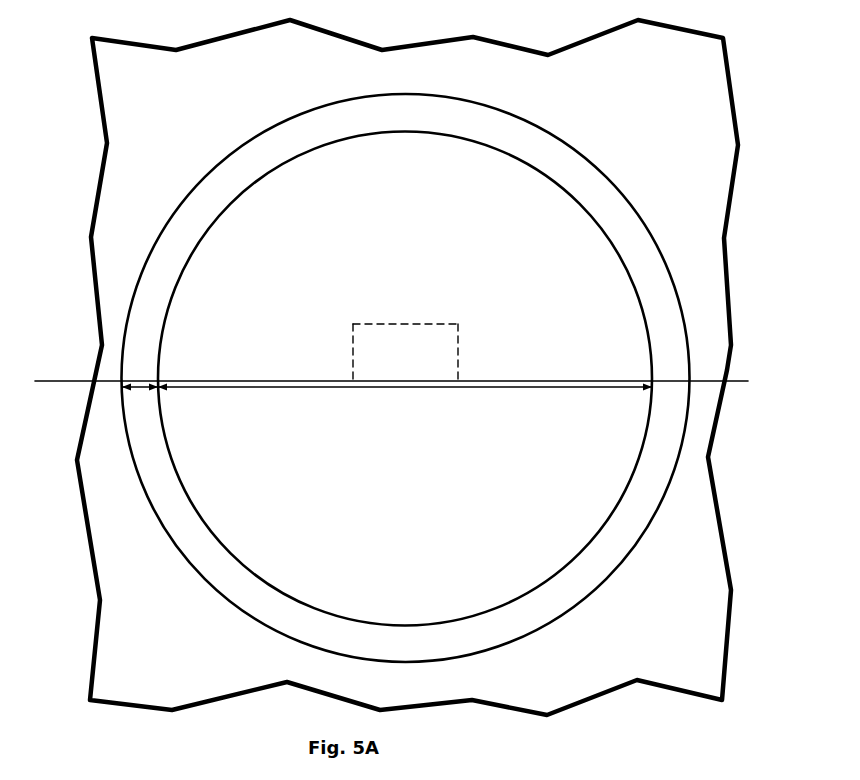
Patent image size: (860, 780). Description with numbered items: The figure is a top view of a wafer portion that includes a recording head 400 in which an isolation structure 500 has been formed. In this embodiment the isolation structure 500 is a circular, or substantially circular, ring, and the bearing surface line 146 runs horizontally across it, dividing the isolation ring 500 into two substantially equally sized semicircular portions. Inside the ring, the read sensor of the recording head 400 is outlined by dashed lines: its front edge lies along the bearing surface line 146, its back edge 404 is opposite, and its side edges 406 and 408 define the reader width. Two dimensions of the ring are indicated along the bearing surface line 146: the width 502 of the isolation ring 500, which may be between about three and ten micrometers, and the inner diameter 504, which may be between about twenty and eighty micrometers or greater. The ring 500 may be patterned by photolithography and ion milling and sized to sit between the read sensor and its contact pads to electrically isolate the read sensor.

The recording head 400 is at (410, 70).
The isolation structure 500 is at (218, 198).
The width of isolation ring 502 is at (142, 388).
The inner diameter of isolation ring 504 is at (273, 388).
The back edge of read sensor 404 is at (402, 324).
The side edge of read sensor 406 is at (353, 354).
The side edge of read sensor 408 is at (458, 349).
The bearing surface line 146 is at (393, 381).